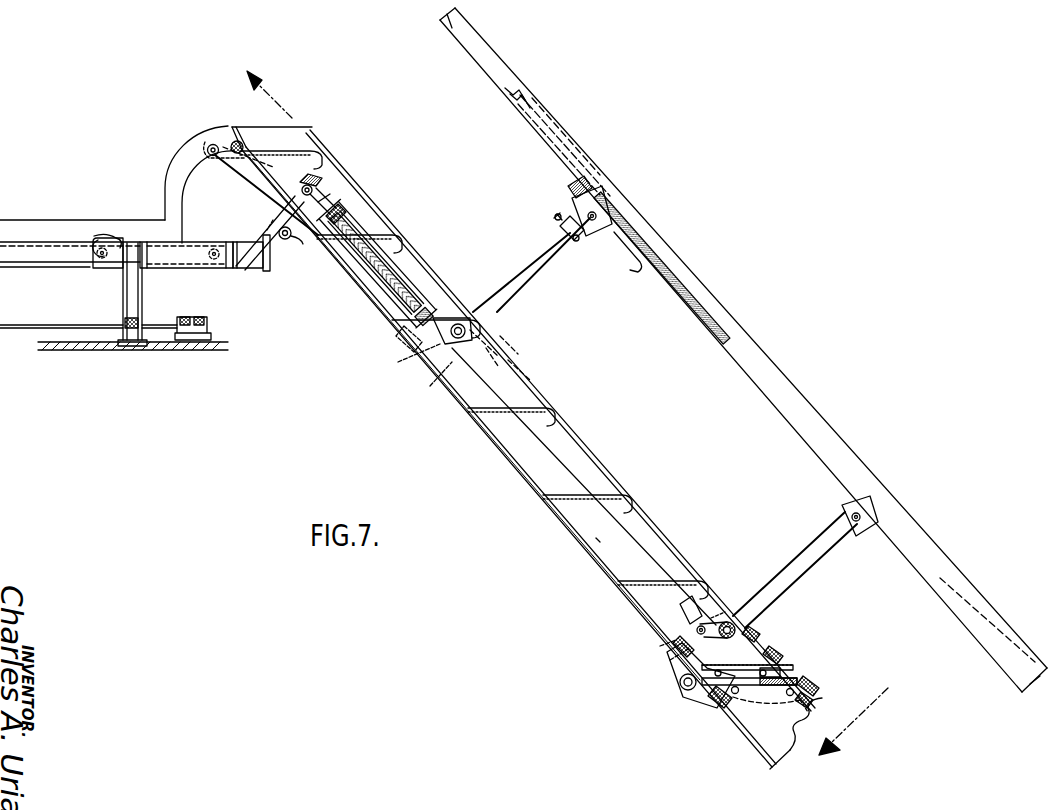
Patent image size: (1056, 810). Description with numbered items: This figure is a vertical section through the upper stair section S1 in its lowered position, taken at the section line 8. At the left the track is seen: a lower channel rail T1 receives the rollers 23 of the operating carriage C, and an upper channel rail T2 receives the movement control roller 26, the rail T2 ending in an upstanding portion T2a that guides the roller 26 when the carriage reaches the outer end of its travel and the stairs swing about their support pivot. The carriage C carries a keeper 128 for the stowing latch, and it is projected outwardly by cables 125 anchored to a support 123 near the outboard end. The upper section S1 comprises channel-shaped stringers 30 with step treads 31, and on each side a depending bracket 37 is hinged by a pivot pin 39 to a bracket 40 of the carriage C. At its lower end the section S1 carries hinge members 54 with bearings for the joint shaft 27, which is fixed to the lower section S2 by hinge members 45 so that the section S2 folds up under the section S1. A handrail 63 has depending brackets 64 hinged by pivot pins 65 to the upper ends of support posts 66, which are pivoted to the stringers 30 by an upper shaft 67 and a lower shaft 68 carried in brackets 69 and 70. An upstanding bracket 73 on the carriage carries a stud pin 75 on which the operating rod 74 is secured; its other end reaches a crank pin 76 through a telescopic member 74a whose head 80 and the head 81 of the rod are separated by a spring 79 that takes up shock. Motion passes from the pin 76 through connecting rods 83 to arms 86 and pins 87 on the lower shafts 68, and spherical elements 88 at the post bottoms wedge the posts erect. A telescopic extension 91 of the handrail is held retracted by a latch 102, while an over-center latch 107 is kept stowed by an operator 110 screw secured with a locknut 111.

The section line 8- 8 is at (567, 408).
The lower channel rail T1 is at (72, 268).
The upper channel rail T2 is at (68, 214).
The upstanding portion T2a is at (172, 190).
The keeper 128 is at (105, 238).
The rollers 23 is at (102, 259).
The operating carriage C is at (184, 269).
The pivot pin 39 is at (289, 240).
The bracket 40 is at (270, 271).
The depending bracket 37 is at (301, 243).
The upstanding bracket 73 is at (268, 214).
The cables 125 is at (98, 306).
The support 123 is at (208, 325).
The movement control roller 26 is at (206, 150).
The stringers 30 is at (525, 464).
The step treads 31 is at (608, 495).
The connecting rods 83 is at (630, 536).
The upper stair section S1 is at (594, 542).
The stud pin 75 is at (306, 184).
The operating rod 74 is at (332, 206).
The head 80 is at (350, 210).
The spring 79 is at (400, 260).
The telescopic member 74a is at (412, 282).
The head 81 is at (440, 304).
The upper shaft 67 is at (462, 318).
The crank pin 76 is at (410, 346).
The enlarged spherical elements 88 is at (434, 364).
The upper bracket 69 is at (500, 348).
The handrail 63 is at (836, 426).
The telescopic extension 91 is at (566, 152).
The latch 107 is at (634, 262).
The latch 102 is at (568, 186).
The depending brackets 64 is at (576, 202).
The pivot pins 65 is at (590, 222).
The support posts 66 is at (556, 246).
The operator 110 is at (577, 244).
The locknut 111 is at (556, 218).
The lower shaft 68 is at (730, 622).
The lower bracket 70 is at (692, 610).
The arms 86 is at (741, 635).
The pins 87 is at (697, 630).
The hinge members 54 is at (676, 669).
The joint shaft 27 is at (688, 692).
The hinge members 45 is at (724, 708).
The lower stair section S2 is at (806, 740).